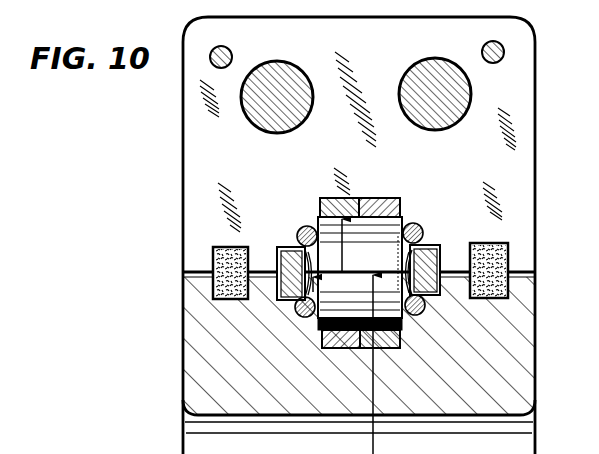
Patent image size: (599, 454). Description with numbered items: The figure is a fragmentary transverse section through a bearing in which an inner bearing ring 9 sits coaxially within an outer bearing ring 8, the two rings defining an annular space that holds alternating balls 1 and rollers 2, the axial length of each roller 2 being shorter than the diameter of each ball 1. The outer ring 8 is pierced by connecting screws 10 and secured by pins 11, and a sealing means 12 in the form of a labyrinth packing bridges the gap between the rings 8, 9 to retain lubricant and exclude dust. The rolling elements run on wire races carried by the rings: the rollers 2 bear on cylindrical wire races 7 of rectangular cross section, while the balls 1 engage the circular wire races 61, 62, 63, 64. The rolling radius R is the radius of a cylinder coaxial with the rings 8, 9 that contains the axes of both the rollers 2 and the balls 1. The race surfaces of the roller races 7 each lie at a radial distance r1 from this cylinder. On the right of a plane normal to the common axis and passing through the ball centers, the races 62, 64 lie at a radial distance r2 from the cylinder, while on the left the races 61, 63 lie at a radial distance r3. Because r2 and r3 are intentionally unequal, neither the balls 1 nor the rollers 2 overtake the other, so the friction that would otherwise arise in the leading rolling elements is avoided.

The ball 1 is at (434, 299).
The roller 2 is at (396, 347).
The circular wire race 61 is at (304, 227).
The circular wire race 62 is at (420, 226).
The circular wire race 63 is at (303, 318).
The circular wire race 64 is at (418, 316).
The cylindrical wire race 7 is at (345, 348).
The outer bearing ring 8 is at (520, 134).
The inner bearing ring 9 is at (520, 366).
The connecting screw 10 is at (458, 104).
The pin 11 is at (500, 55).
The sealing means 12 is at (509, 279).
The radial distance r1 is at (344, 247).
The radial distance r2 is at (394, 262).
The radial distance r3 is at (320, 287).
The rolling radius R is at (375, 451).